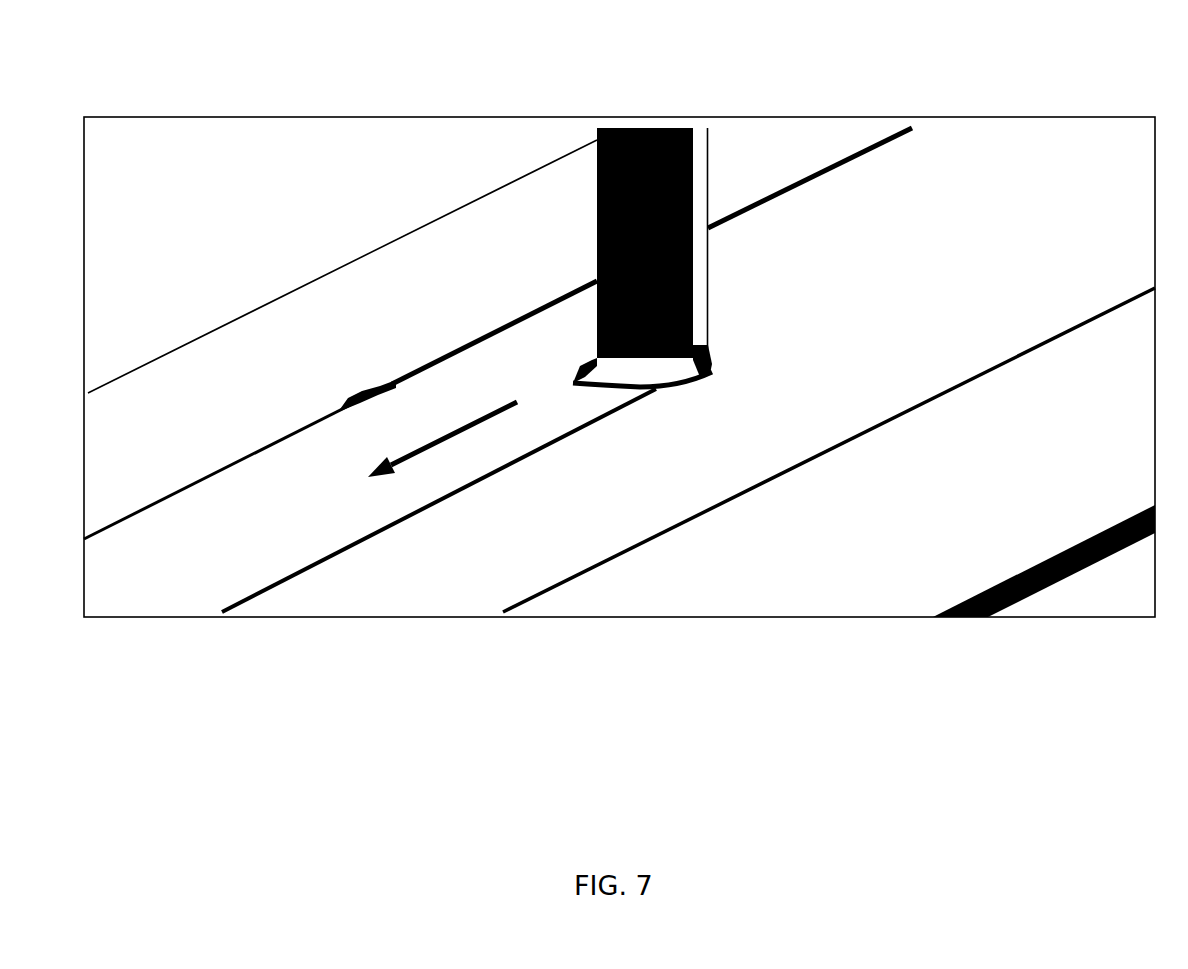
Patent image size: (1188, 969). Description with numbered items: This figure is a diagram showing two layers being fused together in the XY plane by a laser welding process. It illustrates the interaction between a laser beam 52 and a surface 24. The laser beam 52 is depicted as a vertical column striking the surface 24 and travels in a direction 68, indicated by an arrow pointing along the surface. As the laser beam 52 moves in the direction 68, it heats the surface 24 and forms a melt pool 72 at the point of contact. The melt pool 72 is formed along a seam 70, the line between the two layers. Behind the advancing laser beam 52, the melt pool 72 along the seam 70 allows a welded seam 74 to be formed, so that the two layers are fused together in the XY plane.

The laser beam 52 is at (693, 187).
The welded seam 74 is at (872, 262).
The melt pool 72 is at (685, 377).
The seam 70 is at (517, 467).
The direction 68 is at (462, 428).
The surface 24 is at (631, 594).